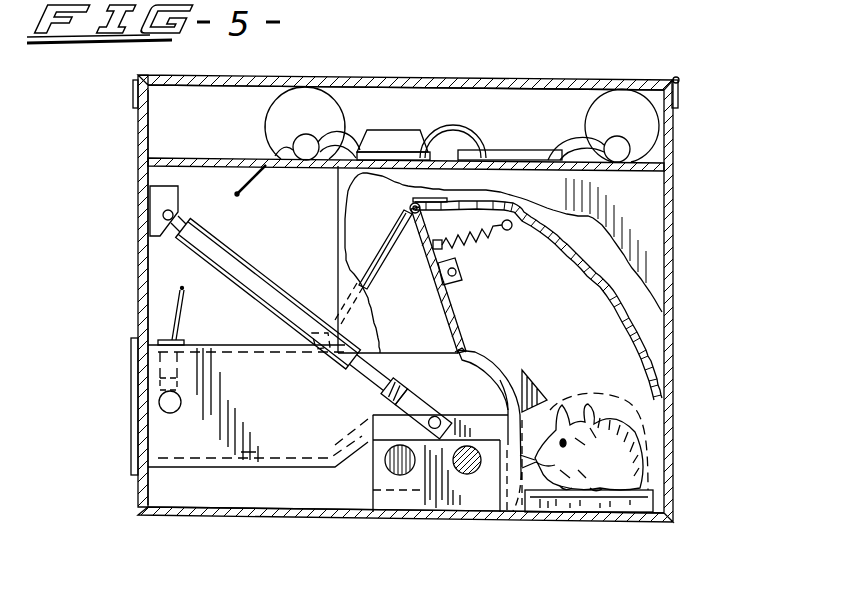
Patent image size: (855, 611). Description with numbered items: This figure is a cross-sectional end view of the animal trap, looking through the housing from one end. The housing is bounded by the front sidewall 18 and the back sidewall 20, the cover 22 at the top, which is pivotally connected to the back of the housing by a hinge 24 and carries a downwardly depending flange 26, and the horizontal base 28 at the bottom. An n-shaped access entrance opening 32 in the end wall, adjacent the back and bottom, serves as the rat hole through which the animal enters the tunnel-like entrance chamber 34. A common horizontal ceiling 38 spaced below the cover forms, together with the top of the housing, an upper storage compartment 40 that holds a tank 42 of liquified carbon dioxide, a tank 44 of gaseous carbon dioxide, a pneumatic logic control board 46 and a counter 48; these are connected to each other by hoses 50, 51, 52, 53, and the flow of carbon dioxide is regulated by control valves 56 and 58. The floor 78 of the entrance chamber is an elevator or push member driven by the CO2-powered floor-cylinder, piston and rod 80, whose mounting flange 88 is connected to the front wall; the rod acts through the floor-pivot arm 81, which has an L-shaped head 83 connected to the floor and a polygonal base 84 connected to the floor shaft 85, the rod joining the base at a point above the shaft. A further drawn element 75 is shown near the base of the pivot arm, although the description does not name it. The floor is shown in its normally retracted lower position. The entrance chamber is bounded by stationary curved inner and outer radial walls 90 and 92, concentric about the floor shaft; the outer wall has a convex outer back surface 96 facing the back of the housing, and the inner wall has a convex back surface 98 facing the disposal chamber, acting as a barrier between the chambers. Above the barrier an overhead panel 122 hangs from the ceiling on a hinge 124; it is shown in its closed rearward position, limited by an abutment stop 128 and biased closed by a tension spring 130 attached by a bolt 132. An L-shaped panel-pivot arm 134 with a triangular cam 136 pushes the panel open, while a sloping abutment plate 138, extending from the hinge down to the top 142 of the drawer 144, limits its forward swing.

The sidewall 18 is at (139, 290).
The sidewall 20 is at (672, 198).
The cover 22 is at (505, 77).
The hinge 24 is at (680, 79).
The flange 26 is at (137, 92).
The base 28 is at (233, 516).
The access entrance opening 32 is at (648, 455).
The entrance chamber 34 is at (637, 406).
The ceiling 38 is at (175, 158).
The upper storage compartment 40 is at (230, 153).
The tank 42 is at (659, 119).
The tank 44 is at (340, 108).
The pneumatic logic control board 46 is at (504, 150).
The counter 48 is at (400, 128).
The hose 50 is at (568, 105).
The hose 51 is at (433, 128).
The hose 52 is at (348, 134).
The hose 53 is at (252, 180).
The control valve 56 is at (632, 148).
The control valve 58 is at (306, 134).
The roller 75 is at (467, 475).
The floor 78 is at (645, 495).
The floor-cylinder, piston and rod 80 is at (348, 364).
The floor-pivot arm 81 is at (373, 416).
The L-shaped head 83 is at (500, 493).
The polygonal base 84 is at (390, 493).
The floor shaft 85 is at (388, 468).
The mounting flange 88 is at (150, 236).
The inner radial wall 90 is at (643, 343).
The outer radial wall 92 is at (478, 352).
The convex outer back surface 96 is at (613, 292).
The convex back surface 98 is at (508, 366).
The panel 122 is at (428, 260).
The hinge 124 is at (413, 202).
The abutment stop 128 is at (455, 284).
The tension spring 130 is at (485, 232).
The bolt 132 is at (438, 240).
The panel-pivot arm 134 is at (530, 377).
The cam 136 is at (498, 393).
The abutment plate 138 is at (385, 250).
The top 142 is at (242, 345).
The drawer 144 is at (131, 360).